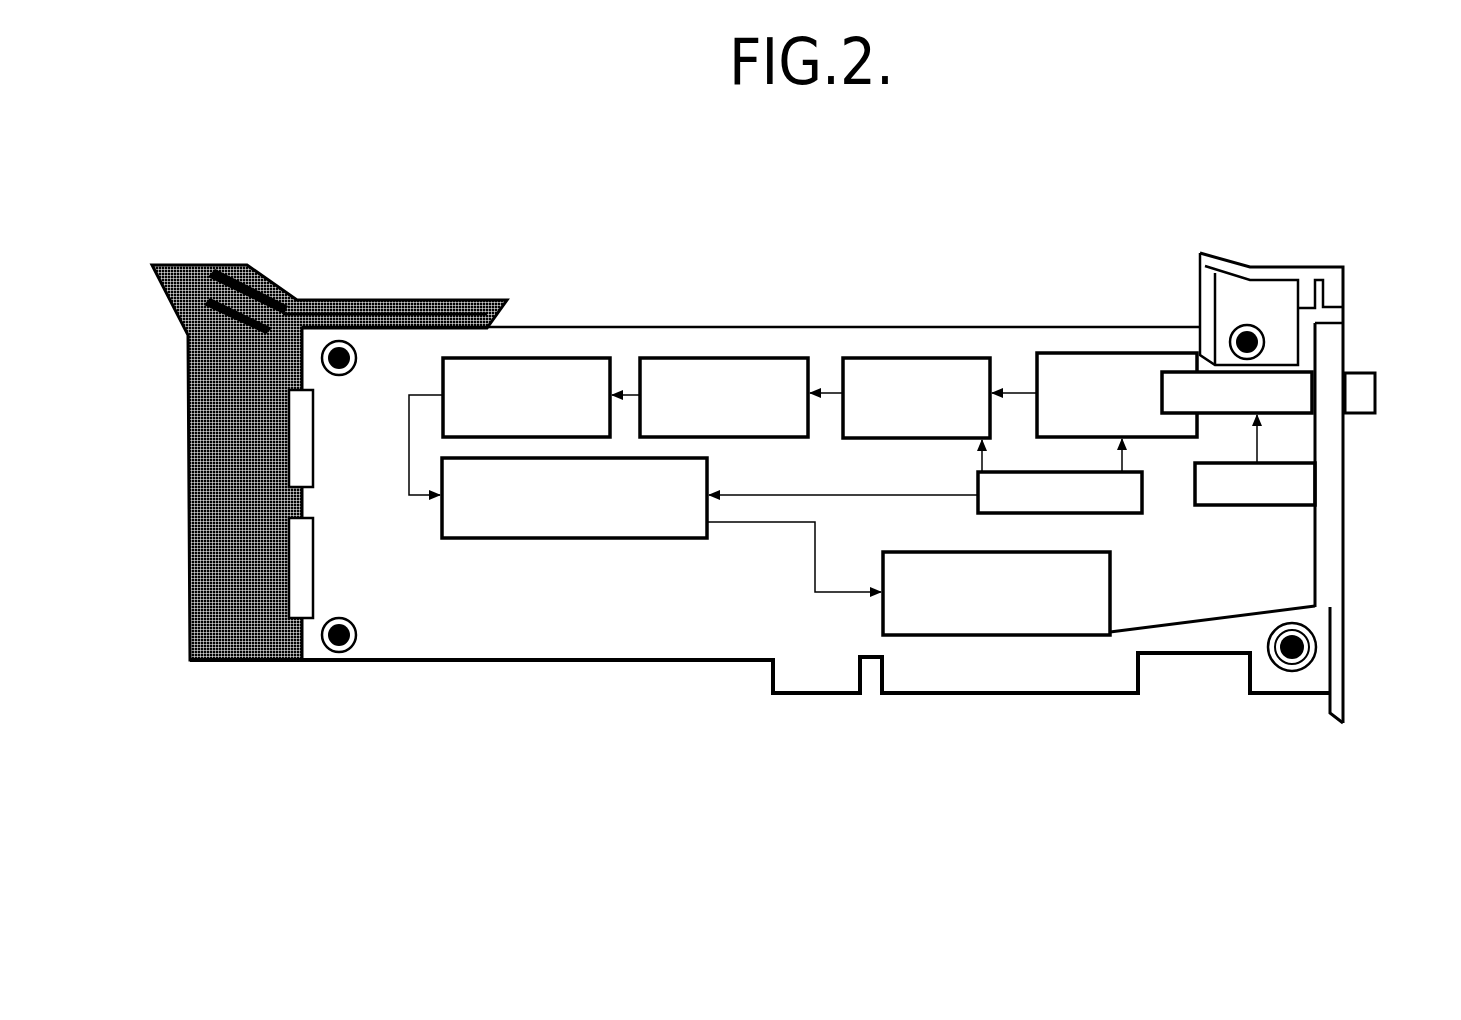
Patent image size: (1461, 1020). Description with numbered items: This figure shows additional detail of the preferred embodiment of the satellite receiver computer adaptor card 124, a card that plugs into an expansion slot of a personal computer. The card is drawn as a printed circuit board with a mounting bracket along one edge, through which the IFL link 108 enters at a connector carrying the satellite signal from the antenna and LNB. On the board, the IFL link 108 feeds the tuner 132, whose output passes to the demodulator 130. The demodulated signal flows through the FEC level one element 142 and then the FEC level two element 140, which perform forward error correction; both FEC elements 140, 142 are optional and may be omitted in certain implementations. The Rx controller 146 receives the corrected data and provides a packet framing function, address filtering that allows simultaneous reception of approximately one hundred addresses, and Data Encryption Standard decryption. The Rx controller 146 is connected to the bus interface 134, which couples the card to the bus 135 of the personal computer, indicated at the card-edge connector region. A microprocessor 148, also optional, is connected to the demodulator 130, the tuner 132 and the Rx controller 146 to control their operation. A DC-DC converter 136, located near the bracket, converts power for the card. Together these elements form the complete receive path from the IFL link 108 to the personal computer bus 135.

The IFL link 108 is at (1393, 368).
The satellite receiver computer adaptor card 124 is at (559, 325).
The demodulator 130 is at (910, 357).
The tuner 132 is at (1078, 352).
The bus interface 134 is at (1060, 635).
The bus 135 is at (1358, 455).
The DC-DC converter 136 is at (1273, 505).
The Forward Error Correction (FEC) Level 2 element 140 is at (442, 357).
The FEC Level 1 element 142 is at (697, 357).
The receiver (Rx) controller 146 is at (642, 538).
The microprocessor 148 is at (978, 513).